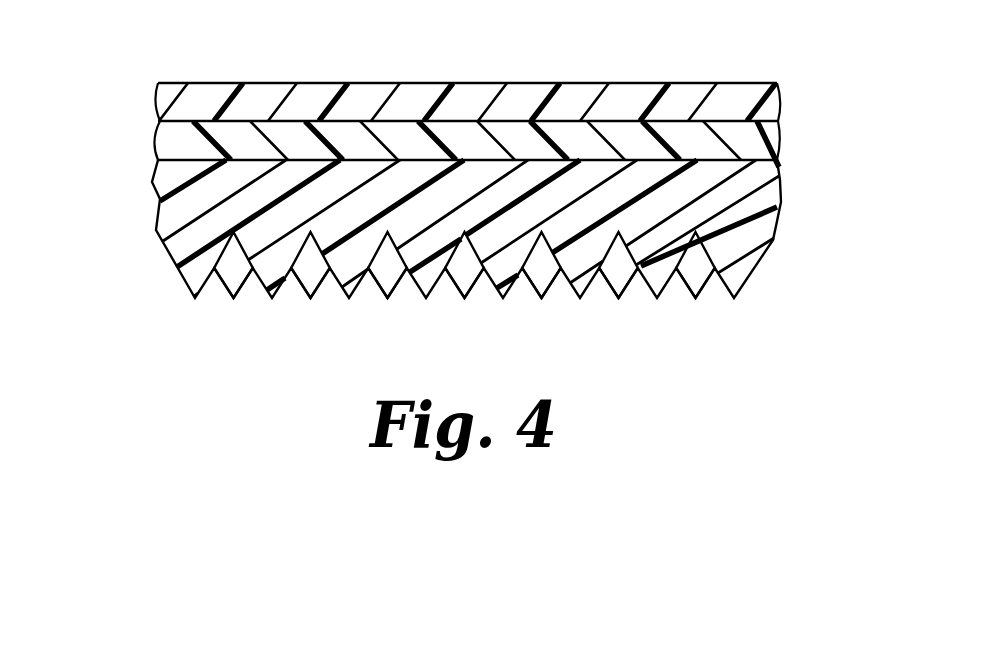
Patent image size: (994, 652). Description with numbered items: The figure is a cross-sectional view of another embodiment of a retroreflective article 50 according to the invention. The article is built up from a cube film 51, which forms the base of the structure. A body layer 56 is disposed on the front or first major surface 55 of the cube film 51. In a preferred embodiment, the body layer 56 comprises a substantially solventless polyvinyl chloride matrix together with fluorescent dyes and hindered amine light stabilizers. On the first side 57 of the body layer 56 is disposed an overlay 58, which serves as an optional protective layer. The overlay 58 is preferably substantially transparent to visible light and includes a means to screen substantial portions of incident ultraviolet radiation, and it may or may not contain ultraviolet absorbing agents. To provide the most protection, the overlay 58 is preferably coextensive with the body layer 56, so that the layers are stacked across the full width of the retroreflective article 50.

The retroreflective article 50 is at (749, 56).
The cube film 51 is at (723, 212).
The first major surface 55 is at (167, 146).
The body layer 56 is at (763, 144).
The first side 57 is at (163, 95).
The overlay 58 is at (422, 95).